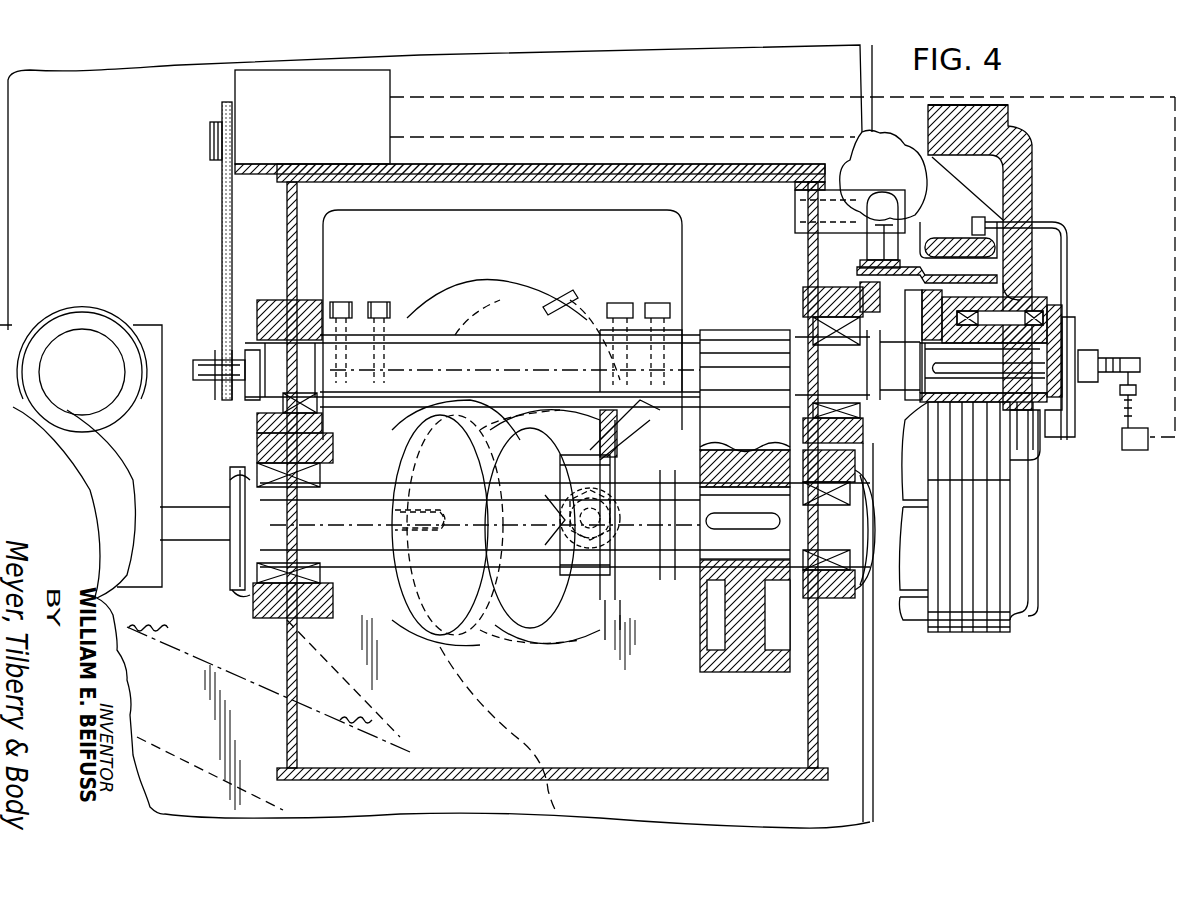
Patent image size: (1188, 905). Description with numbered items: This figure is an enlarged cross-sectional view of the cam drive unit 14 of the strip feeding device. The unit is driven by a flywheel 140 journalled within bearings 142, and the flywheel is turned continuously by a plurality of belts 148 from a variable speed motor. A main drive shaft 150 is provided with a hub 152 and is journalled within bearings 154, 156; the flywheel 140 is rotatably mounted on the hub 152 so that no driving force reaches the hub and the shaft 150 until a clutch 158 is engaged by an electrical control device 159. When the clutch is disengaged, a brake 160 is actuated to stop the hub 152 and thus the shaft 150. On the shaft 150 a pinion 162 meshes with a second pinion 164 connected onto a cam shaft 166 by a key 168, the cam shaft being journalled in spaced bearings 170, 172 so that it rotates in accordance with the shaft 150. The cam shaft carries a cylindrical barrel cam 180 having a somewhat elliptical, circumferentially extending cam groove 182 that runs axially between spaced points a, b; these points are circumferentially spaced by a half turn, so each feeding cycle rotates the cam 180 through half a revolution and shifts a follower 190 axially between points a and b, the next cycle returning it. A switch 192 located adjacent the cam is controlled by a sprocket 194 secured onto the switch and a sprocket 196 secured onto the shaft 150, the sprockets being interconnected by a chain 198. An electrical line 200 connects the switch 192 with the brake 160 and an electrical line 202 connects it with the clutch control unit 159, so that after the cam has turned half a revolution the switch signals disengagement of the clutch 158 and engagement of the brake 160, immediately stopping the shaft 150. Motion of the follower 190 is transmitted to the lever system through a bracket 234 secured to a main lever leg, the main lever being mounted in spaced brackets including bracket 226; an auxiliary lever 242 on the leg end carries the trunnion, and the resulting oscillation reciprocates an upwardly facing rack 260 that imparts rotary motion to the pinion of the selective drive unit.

The cam drive unit 14 is at (1053, 81).
The flywheel 140 is at (1032, 185).
The bearings 142 is at (1045, 312).
The belts 148 is at (985, 632).
The main drive shaft 150 is at (915, 362).
The hub 152 is at (922, 305).
The bearing 154 is at (805, 312).
The bearing 156 is at (318, 310).
The clutch 158 is at (933, 238).
The electrical control device 159 is at (1138, 452).
The brake 160 is at (805, 245).
The pinion 162 is at (722, 330).
The second pinion 164 is at (742, 672).
The cam shaft 166 is at (680, 565).
The key 168 is at (755, 520).
The bearing 170 is at (840, 592).
The bearing 172 is at (258, 607).
The barrel cam 180 is at (590, 640).
The cam groove 182 is at (475, 635).
The follower 190 is at (640, 510).
The switch 192 is at (378, 130).
The sprocket 194 is at (214, 162).
The sprocket 196 is at (225, 398).
The chain 198 is at (221, 278).
The electrical line 200 is at (662, 137).
The electrical line 202 is at (693, 97).
The bracket 226 is at (470, 300).
The bracket 234 is at (610, 630).
The auxiliary lever 242 is at (372, 690).
The rack 260 is at (150, 628).
The point a is at (435, 508).
The point b is at (595, 492).